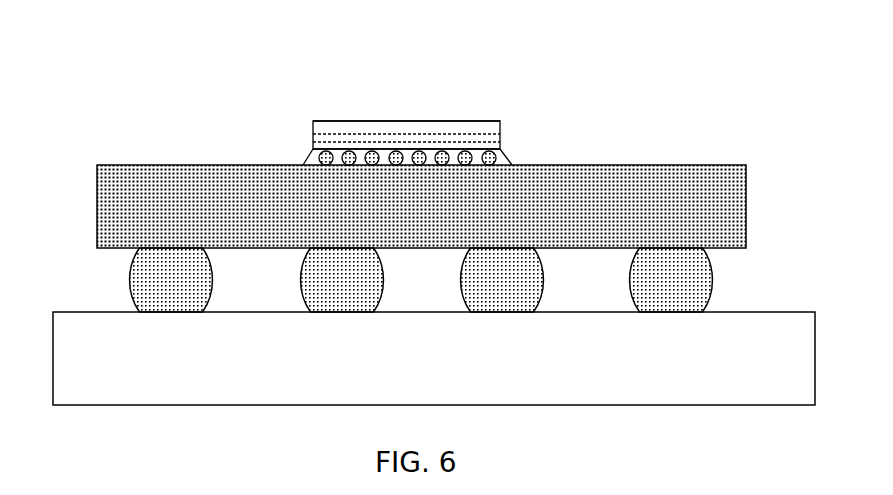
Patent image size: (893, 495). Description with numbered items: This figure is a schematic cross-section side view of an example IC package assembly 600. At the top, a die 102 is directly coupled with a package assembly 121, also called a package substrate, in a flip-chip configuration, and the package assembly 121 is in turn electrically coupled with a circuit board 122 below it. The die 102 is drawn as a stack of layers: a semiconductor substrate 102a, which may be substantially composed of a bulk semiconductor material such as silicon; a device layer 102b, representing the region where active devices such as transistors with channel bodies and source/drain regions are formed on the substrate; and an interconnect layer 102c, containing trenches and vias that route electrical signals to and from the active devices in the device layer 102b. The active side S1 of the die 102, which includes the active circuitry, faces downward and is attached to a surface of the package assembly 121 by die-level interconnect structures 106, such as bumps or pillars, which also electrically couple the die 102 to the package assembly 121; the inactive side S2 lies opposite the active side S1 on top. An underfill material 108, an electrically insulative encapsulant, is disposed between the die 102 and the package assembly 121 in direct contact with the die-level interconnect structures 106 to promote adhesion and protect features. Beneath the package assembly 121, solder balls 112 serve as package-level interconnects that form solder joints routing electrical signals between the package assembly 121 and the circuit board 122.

The IC package assembly 600 is at (636, 84).
The die 102 is at (447, 138).
The semiconductor substrate 102a is at (413, 130).
The device layer 102b is at (493, 137).
The interconnect layer 102c is at (493, 143).
The active side S1 is at (505, 155).
The inactive side S2 is at (506, 117).
The die-level interconnect structures 106 is at (316, 156).
The underfill material 108 is at (306, 157).
The solder balls 112 is at (131, 292).
The package assembly 121 is at (453, 218).
The circuit board 122 is at (455, 385).